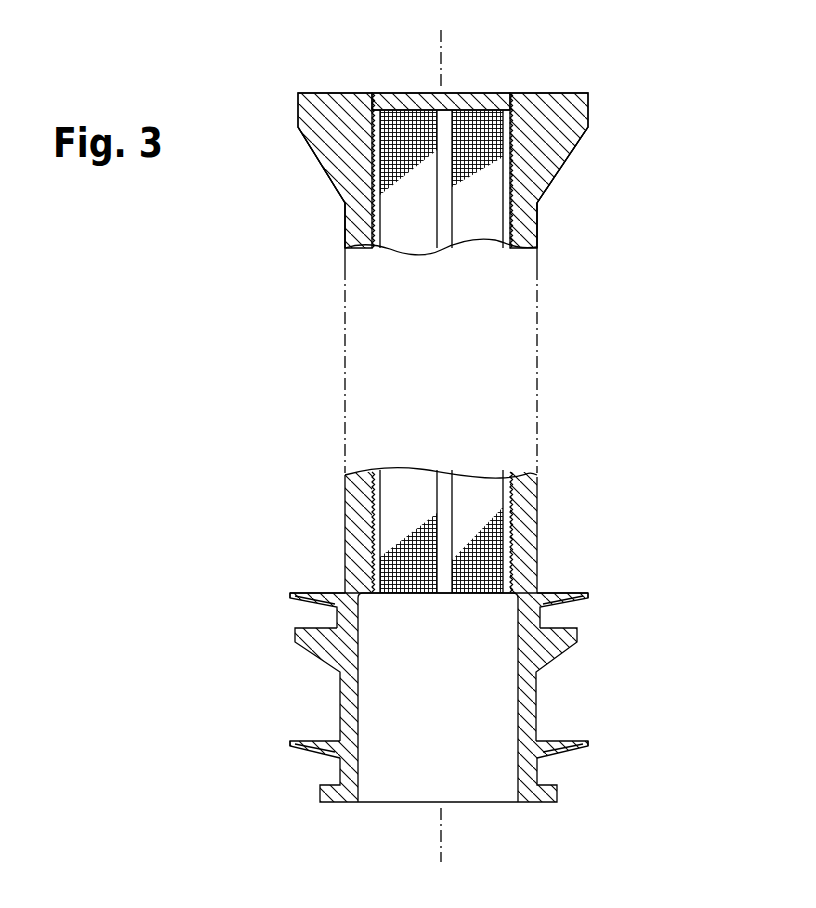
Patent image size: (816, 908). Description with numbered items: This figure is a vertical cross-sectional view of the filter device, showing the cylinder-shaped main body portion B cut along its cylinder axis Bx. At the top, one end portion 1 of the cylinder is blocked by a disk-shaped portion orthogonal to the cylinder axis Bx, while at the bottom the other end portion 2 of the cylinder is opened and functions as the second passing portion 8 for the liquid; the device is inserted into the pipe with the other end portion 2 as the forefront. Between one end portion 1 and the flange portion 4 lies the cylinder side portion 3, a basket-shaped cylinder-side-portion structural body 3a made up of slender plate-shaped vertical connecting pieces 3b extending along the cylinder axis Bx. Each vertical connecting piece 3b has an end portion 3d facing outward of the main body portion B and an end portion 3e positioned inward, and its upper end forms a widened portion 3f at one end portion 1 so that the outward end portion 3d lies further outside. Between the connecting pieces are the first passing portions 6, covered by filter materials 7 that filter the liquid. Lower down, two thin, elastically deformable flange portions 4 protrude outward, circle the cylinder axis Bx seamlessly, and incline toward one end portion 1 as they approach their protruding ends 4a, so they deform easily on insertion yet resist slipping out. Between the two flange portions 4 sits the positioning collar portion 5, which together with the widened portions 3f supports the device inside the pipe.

The one end portion 1 is at (478, 93).
The other end portion 2 is at (378, 803).
The cylinder side portion 3 is at (540, 490).
The cylinder-side-portion structural body 3a is at (540, 516).
The vertical connecting piece 3b is at (542, 218).
The end portion 3d is at (345, 525).
The end portion 3e is at (393, 483).
The widened portion 3f is at (298, 100).
The flange portion 4 is at (595, 604).
The protruding end 4a is at (290, 594).
The positioning collar portion 5 is at (579, 638).
The first passing portion 6 is at (470, 487).
The filter material 7 is at (405, 213).
The second passing portion 8 is at (480, 785).
The main body portion B is at (542, 232).
The cylinder axis Bx is at (441, 446).